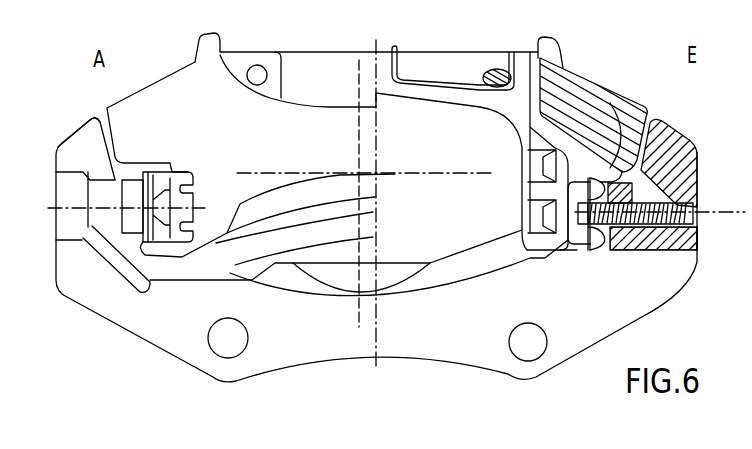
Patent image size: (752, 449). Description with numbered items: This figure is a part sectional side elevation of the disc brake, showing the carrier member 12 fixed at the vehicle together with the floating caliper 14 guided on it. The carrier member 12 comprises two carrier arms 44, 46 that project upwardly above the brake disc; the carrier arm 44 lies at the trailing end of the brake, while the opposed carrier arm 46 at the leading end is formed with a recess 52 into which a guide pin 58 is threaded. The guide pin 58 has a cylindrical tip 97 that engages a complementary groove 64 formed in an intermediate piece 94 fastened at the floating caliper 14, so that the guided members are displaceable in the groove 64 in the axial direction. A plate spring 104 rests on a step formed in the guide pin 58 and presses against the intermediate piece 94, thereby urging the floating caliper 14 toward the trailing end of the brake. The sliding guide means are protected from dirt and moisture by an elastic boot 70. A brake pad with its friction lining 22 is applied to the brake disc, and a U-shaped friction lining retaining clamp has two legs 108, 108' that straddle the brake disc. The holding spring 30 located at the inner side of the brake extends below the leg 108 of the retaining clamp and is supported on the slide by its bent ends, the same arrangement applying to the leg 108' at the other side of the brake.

The carrier member 12 is at (457, 332).
The floating caliper 14 is at (575, 90).
The friction lining 22 is at (413, 223).
The holding spring 30 is at (433, 80).
The carrier arm 44 is at (77, 150).
The carrier arm 46 is at (678, 148).
The recess 52 is at (677, 250).
The guide pin 58 is at (640, 230).
The groove 64 is at (593, 248).
The elastic boot 70 is at (626, 110).
The intermediate piece 94 is at (570, 233).
The cylindrical tip 97 is at (578, 215).
The plate spring 104 is at (587, 192).
The leg of retaining clamp 108 is at (495, 57).
The leg of retaining clamp 108' is at (268, 55).